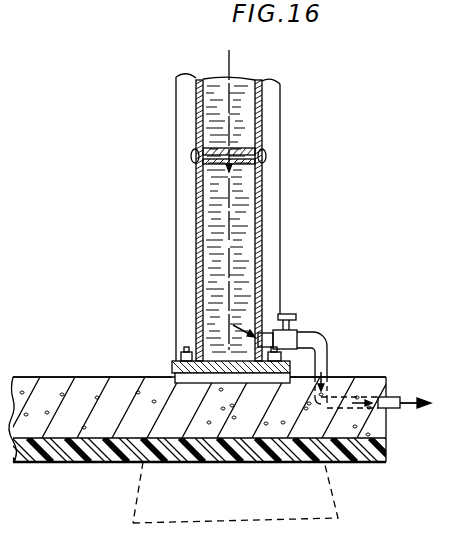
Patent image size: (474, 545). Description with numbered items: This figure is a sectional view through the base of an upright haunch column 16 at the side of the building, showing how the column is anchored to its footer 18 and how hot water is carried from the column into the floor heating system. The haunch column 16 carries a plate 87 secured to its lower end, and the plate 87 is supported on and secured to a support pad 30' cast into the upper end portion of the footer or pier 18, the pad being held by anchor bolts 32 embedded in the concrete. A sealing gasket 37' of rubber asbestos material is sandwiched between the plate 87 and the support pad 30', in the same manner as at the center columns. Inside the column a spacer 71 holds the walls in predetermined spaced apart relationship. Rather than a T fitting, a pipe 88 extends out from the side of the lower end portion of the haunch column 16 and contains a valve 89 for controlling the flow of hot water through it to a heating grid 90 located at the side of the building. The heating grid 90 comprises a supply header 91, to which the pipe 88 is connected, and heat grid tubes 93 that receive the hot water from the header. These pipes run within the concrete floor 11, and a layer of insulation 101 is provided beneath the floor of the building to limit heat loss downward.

The concrete floor 11 is at (93, 376).
The haunch column 16 is at (176, 195).
The footer 18 is at (325, 465).
The support pad 30' is at (199, 478).
The anchor bolt 32 is at (177, 462).
The sealing gasket 37' is at (199, 359).
The spacer 71 is at (238, 147).
The plate 87 is at (218, 361).
The pipe 88 is at (314, 332).
The valve 89 is at (289, 312).
The heating grid 90 is at (362, 392).
The supply header 91 is at (336, 372).
The heat grid tube 93 is at (397, 395).
The layer of insulation 101 is at (386, 446).